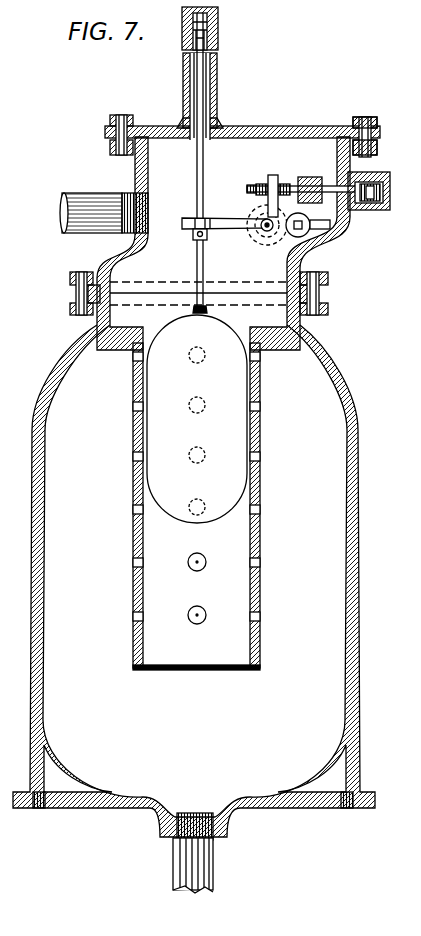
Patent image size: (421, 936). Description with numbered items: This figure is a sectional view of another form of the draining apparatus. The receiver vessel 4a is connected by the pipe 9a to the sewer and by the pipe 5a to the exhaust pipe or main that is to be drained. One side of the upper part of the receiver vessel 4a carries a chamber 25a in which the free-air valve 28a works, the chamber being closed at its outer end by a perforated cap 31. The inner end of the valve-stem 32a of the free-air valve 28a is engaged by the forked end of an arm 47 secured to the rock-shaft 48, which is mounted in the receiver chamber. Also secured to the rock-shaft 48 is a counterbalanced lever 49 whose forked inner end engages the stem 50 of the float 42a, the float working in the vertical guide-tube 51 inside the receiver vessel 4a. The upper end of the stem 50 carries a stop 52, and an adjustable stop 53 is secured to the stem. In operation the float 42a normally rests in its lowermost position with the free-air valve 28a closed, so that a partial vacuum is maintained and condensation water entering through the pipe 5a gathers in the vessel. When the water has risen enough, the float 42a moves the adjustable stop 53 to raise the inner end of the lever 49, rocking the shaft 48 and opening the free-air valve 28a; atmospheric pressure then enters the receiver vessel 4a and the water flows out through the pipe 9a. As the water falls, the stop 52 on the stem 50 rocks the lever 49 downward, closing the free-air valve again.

The receiver vessel 4a is at (221, 721).
The pipe 5a is at (88, 214).
The pipe 9a is at (200, 859).
The chamber 25a is at (372, 205).
The free-air valve 28a is at (380, 170).
The perforated cap 31 is at (389, 174).
The valve-stem 32a is at (337, 163).
The float 42a is at (192, 441).
The arm 47 is at (273, 186).
The rock-shaft 48 is at (268, 236).
The counterbalanced lever 49 is at (229, 221).
The stem 50 is at (196, 262).
The vertical guide-tube 51 is at (262, 483).
The stop 52 is at (210, 32).
The adjustable stop 53 is at (211, 247).